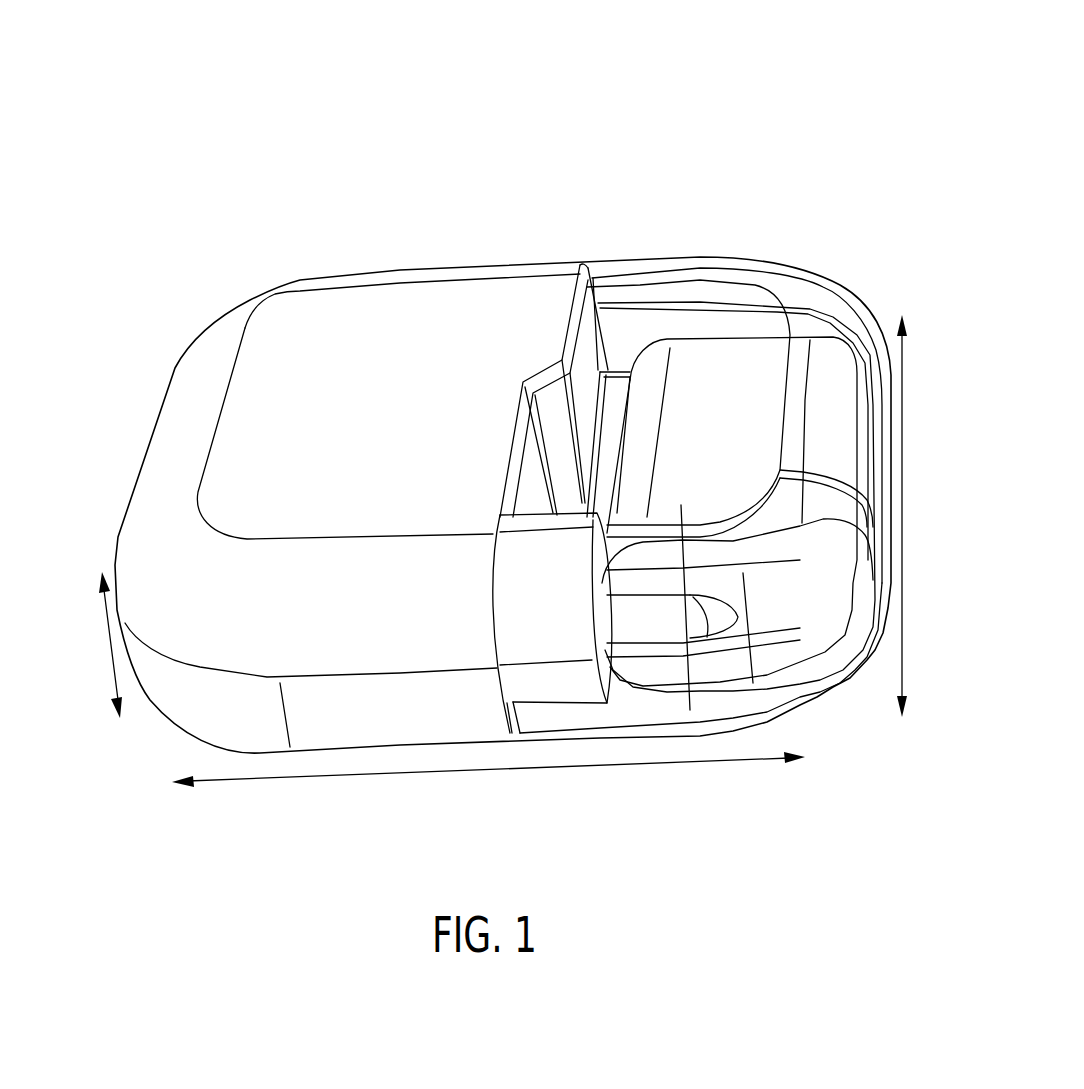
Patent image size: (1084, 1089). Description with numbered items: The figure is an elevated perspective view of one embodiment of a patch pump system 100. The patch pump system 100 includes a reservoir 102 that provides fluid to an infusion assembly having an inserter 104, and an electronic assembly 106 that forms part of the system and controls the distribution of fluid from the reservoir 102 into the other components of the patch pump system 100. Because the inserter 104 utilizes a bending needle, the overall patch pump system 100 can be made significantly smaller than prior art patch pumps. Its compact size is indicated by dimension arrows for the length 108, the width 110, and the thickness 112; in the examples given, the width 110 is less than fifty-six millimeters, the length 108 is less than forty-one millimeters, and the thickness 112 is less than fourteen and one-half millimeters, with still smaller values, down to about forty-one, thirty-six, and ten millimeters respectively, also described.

The patch pump system 100 is at (727, 103).
The reservoir 102 is at (702, 375).
The inserter 104 is at (555, 712).
The electronic assembly 106 is at (307, 320).
The length 108 is at (903, 663).
The width 110 is at (280, 777).
The thickness 112 is at (112, 672).